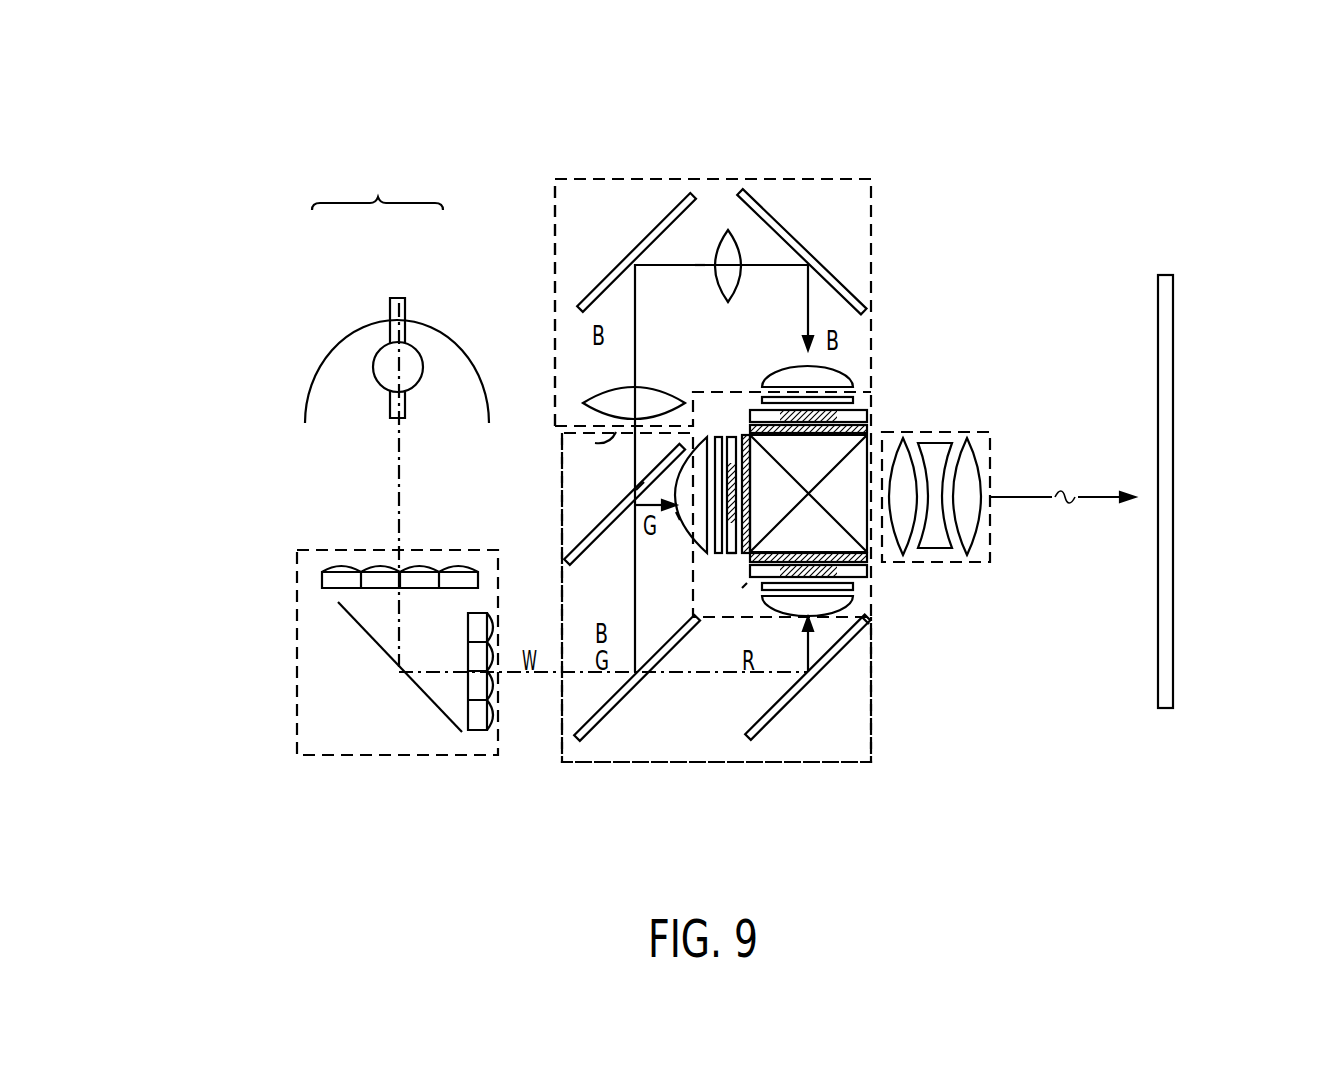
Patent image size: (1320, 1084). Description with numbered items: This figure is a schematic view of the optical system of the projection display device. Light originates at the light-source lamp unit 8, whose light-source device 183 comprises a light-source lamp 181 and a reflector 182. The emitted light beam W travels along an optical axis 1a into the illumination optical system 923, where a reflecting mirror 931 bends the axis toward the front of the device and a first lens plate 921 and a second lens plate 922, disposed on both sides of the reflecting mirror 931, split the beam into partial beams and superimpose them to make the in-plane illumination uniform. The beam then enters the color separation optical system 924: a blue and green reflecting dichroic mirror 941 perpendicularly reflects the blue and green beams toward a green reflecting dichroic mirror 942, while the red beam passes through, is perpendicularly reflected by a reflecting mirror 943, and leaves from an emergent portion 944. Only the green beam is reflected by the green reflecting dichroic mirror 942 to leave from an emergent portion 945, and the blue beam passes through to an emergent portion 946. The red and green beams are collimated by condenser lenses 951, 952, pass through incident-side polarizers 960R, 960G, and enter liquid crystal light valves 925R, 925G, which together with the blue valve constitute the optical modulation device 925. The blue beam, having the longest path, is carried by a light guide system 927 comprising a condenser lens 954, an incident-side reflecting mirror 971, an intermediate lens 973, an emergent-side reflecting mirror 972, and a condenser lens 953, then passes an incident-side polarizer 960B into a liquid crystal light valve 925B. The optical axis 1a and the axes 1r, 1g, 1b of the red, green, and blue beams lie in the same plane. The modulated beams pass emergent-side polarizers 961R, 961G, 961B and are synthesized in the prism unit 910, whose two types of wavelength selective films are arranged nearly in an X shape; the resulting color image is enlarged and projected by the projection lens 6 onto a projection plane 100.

The light-source lamp unit 8 is at (342, 335).
The light-source lamp 181 is at (384, 348).
The reflector 182 is at (423, 345).
The light-source device 183 is at (377, 189).
The optical axis 1a is at (399, 510).
The first lens plate 921 is at (322, 582).
The second lens plate 922 is at (478, 730).
The illumination optical system 923 is at (297, 688).
The reflecting mirror 931 is at (428, 700).
The light guide system 927 is at (570, 179).
The color separation optical system 924 is at (875, 735).
The incident-side reflecting mirror 971 is at (603, 282).
The emergent-side reflecting mirror 972 is at (798, 240).
The intermediate lens 973 is at (729, 230).
The optical axis 1b is at (700, 265).
The condenser lens 954 is at (583, 403).
The emergent portion 946 is at (595, 443).
The condenser lens 952 is at (702, 437).
The emergent portion 945 is at (680, 520).
The green reflecting dichroic mirror 942 is at (602, 520).
The optical axis 1g is at (641, 486).
The blue and green reflecting dichroic mirror 941 is at (595, 735).
The reflecting mirror 943 is at (765, 730).
The emergent portion 944 is at (865, 620).
The incident-side polarizer 960G is at (715, 478).
The liquid crystal light valve 925G is at (734, 437).
The emergent-side polarizer 961G is at (742, 553).
The optical modulation device 925 is at (740, 578).
The optical axis 1r is at (740, 595).
The prism unit 910 is at (835, 440).
The emergent-side polarizer 961B is at (870, 437).
The liquid crystal light valve 925B is at (867, 416).
The incident-side polarizer 960B is at (853, 400).
The condenser lens 953 is at (848, 378).
The emergent-side polarizer 961R is at (867, 557).
The liquid crystal light valve 925R is at (867, 571).
The incident-side polarizer 960R is at (853, 587).
The condenser lens 951 is at (850, 600).
The projection lens 6 is at (990, 446).
The projection plane 100 is at (1173, 320).